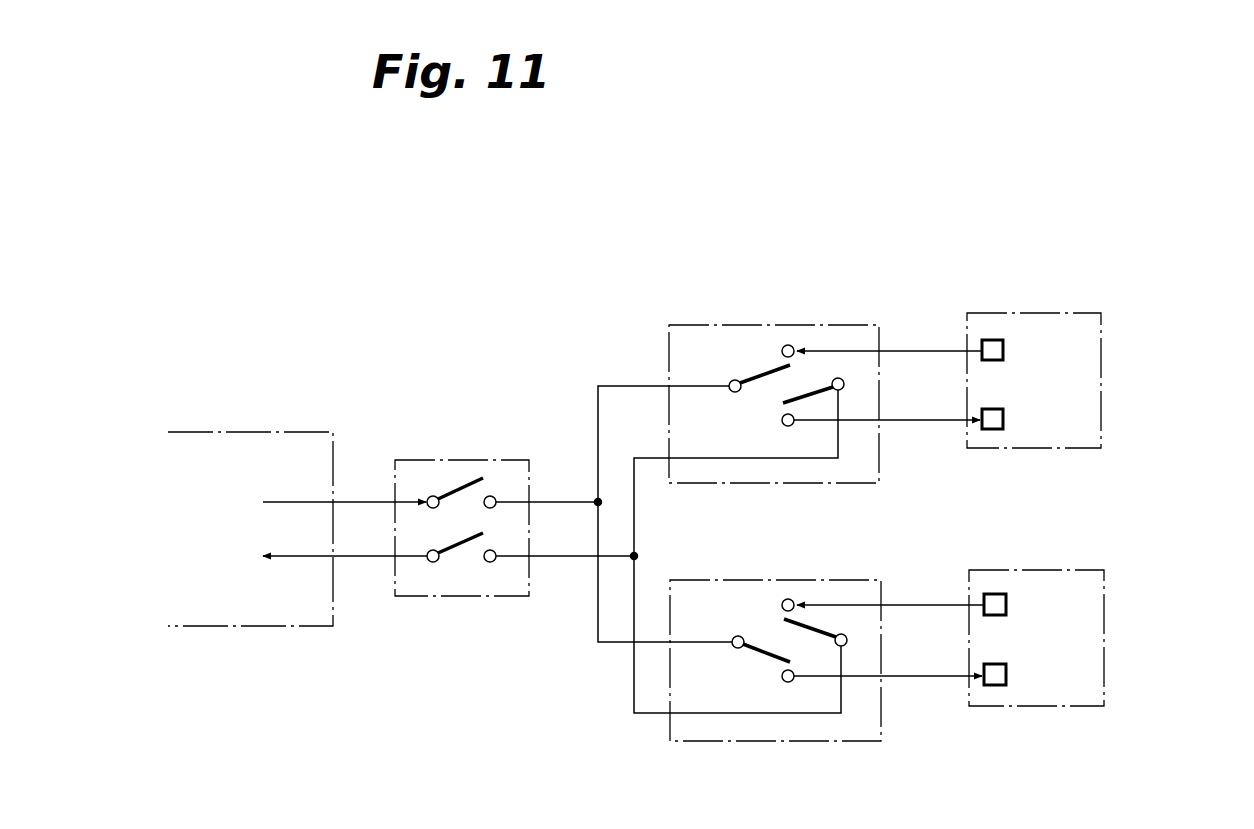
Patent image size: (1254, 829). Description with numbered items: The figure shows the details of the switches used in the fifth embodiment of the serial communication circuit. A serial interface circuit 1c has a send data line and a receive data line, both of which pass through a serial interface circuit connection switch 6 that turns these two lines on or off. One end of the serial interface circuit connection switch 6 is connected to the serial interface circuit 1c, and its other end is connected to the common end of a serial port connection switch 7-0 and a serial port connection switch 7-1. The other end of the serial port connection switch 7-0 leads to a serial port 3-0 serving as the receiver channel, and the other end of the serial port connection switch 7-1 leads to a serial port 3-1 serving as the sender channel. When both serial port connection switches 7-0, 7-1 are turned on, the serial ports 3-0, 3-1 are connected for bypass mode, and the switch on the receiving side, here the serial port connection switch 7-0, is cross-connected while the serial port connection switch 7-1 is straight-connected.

The serial interface circuit 1c is at (208, 430).
The serial interface circuit connection switch 6 is at (447, 458).
The serial port connection switch 7-0 is at (670, 365).
The serial port connection switch 7-1 is at (790, 742).
The serial port 3-0 is at (1102, 403).
The serial port 3-1 is at (1104, 673).